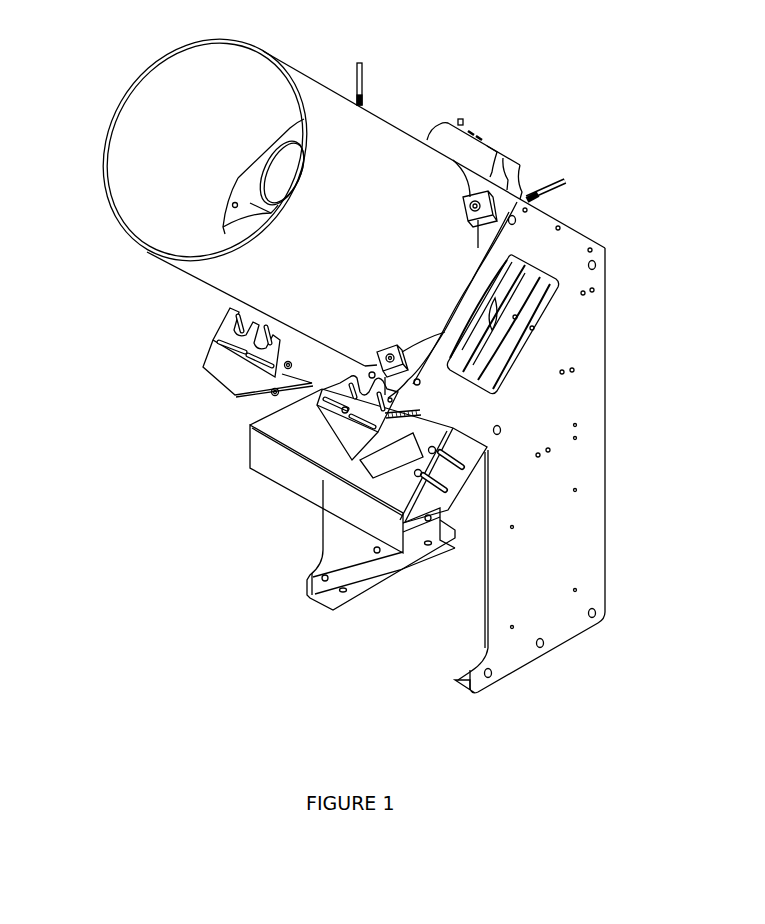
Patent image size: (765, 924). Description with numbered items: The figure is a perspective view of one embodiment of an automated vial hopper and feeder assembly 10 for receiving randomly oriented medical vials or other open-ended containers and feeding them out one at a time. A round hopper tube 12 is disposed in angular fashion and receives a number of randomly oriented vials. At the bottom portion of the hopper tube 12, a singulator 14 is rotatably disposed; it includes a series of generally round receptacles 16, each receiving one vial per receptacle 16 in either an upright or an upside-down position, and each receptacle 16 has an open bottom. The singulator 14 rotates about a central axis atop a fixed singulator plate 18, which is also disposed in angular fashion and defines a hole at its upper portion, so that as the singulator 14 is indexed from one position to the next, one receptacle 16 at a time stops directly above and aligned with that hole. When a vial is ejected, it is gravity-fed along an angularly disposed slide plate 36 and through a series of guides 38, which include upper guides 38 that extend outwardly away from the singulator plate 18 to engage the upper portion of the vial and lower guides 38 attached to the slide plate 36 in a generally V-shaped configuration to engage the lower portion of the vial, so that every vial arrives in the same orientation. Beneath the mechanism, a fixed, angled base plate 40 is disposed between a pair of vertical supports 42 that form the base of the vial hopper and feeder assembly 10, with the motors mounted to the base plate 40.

The automated vial hopper and feeder assembly 10 is at (392, 76).
The hopper tube 12 is at (136, 80).
The singulator 14 is at (256, 206).
The receptacle 16 is at (279, 173).
The singulator plate 18 is at (478, 183).
The slide plate 36 is at (283, 449).
The guides 38 is at (342, 450).
The base plate 40 is at (456, 481).
The vertical supports 42 is at (539, 230).